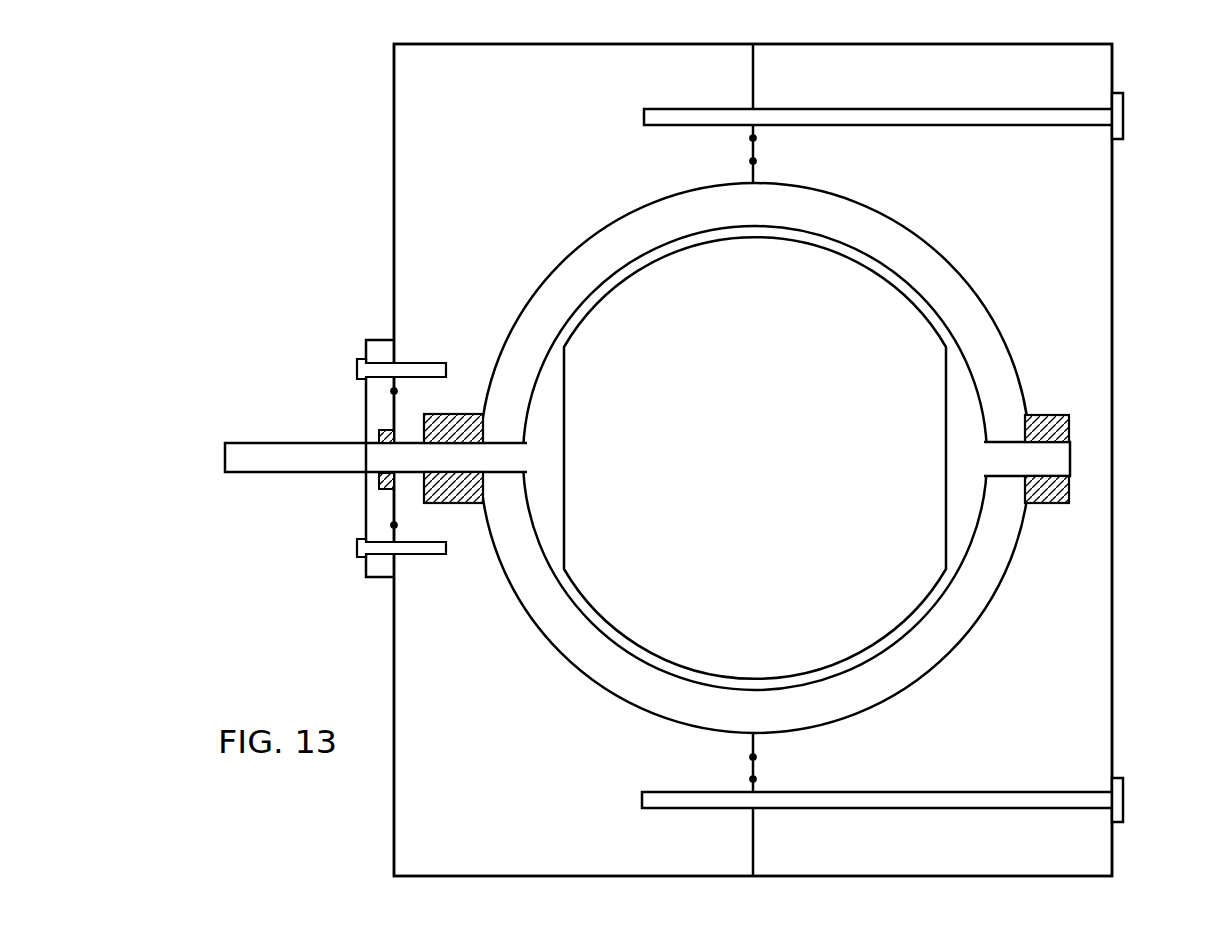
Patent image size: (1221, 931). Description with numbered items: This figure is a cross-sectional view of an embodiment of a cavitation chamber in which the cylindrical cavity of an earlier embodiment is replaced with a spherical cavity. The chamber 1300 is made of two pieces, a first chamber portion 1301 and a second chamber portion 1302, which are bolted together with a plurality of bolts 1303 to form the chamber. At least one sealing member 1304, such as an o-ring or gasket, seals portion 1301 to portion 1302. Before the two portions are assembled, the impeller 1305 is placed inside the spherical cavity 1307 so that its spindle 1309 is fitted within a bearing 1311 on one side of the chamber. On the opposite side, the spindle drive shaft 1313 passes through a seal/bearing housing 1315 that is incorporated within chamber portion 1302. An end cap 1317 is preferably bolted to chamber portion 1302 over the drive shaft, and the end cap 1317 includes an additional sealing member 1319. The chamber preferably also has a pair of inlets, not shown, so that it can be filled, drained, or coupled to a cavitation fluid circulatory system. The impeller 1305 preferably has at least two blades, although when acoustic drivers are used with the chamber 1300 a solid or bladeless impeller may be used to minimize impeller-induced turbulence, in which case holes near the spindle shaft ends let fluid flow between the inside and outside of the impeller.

The chamber 1300 is at (330, 205).
The chamber portion 1301 is at (1043, 189).
The chamber portion 1302 is at (509, 188).
The bolts 1303 is at (1124, 117).
The sealing member 1304 is at (753, 779).
The impeller 1305 is at (651, 258).
The spherical cavity 1307 is at (870, 222).
The spindle 1309 is at (1046, 458).
The bearing 1311 is at (1032, 413).
The spindle drive shaft 1313 is at (313, 458).
The seal/bearing housing 1315 is at (473, 413).
The end cap 1317 is at (372, 340).
The sealing member 1319 is at (388, 430).